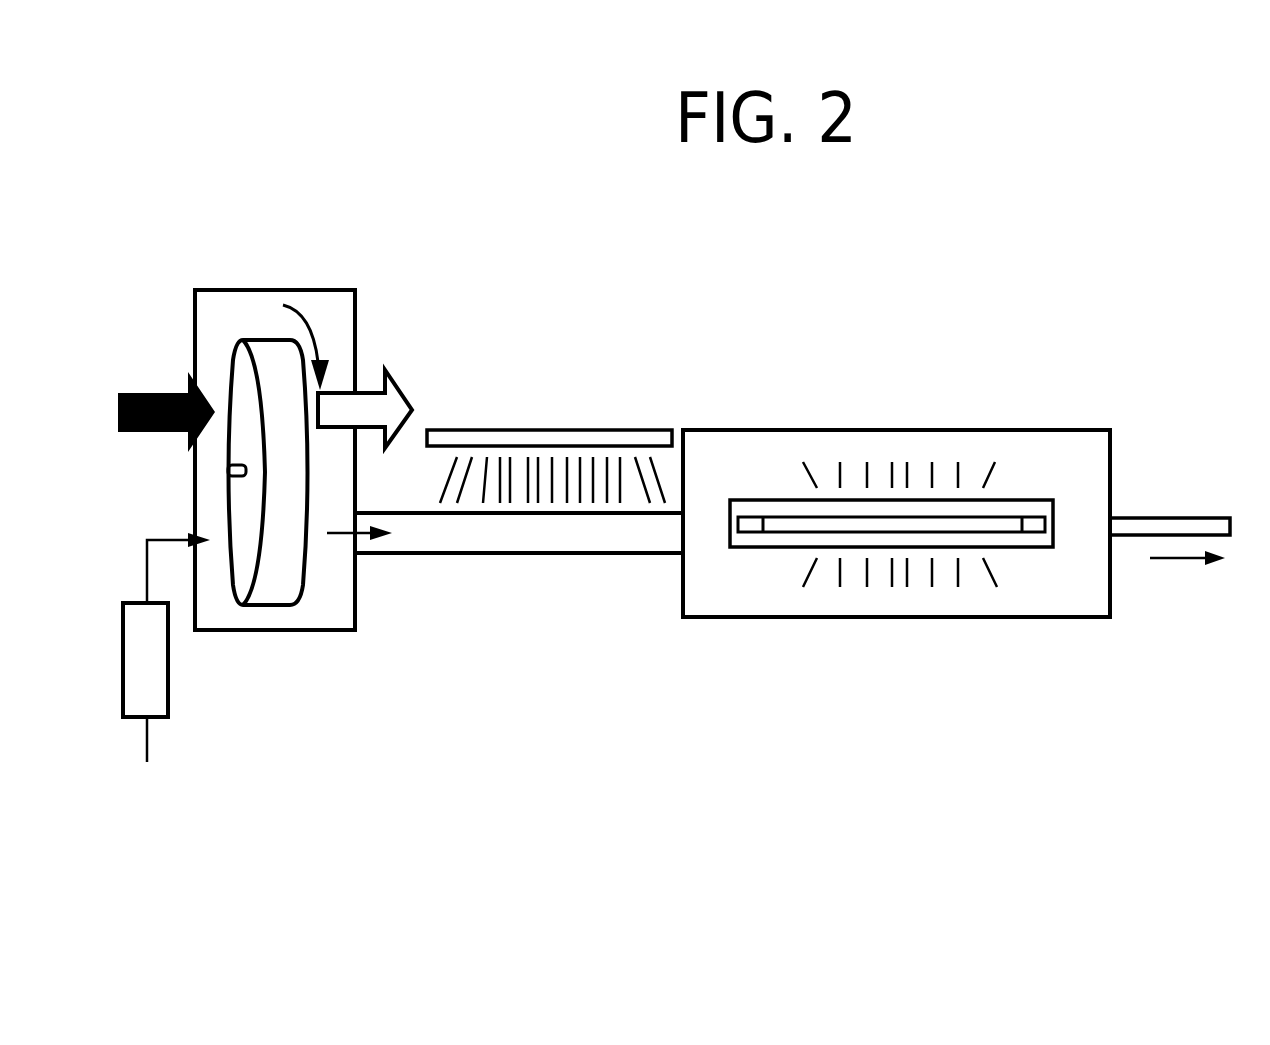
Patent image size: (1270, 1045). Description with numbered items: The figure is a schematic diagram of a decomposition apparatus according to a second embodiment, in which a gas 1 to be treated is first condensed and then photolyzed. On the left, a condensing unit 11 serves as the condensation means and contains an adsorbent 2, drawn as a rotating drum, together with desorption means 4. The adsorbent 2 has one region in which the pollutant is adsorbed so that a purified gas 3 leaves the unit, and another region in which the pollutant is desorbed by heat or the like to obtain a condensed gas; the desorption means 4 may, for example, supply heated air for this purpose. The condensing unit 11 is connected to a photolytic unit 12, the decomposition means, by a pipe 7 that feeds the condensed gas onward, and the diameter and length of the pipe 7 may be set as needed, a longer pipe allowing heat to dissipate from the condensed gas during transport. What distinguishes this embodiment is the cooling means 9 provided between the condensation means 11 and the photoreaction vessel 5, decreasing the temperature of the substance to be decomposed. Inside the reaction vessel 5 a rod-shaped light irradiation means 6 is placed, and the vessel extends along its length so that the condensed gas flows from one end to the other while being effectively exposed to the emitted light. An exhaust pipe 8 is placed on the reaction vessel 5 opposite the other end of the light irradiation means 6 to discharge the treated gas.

The gas to be treated 1 is at (133, 393).
The adsorbent 2 is at (255, 340).
The purified gas 3 is at (367, 398).
The desorption means 4 is at (160, 690).
The photoreaction vessel 5 is at (755, 440).
The light irradiation means 6 is at (920, 508).
The pipe 7 is at (517, 537).
The exhaust pipe 8 is at (1178, 520).
The cooling means 9 is at (535, 430).
The condensing unit 11 is at (417, 797).
The photolytic unit 12 is at (948, 621).